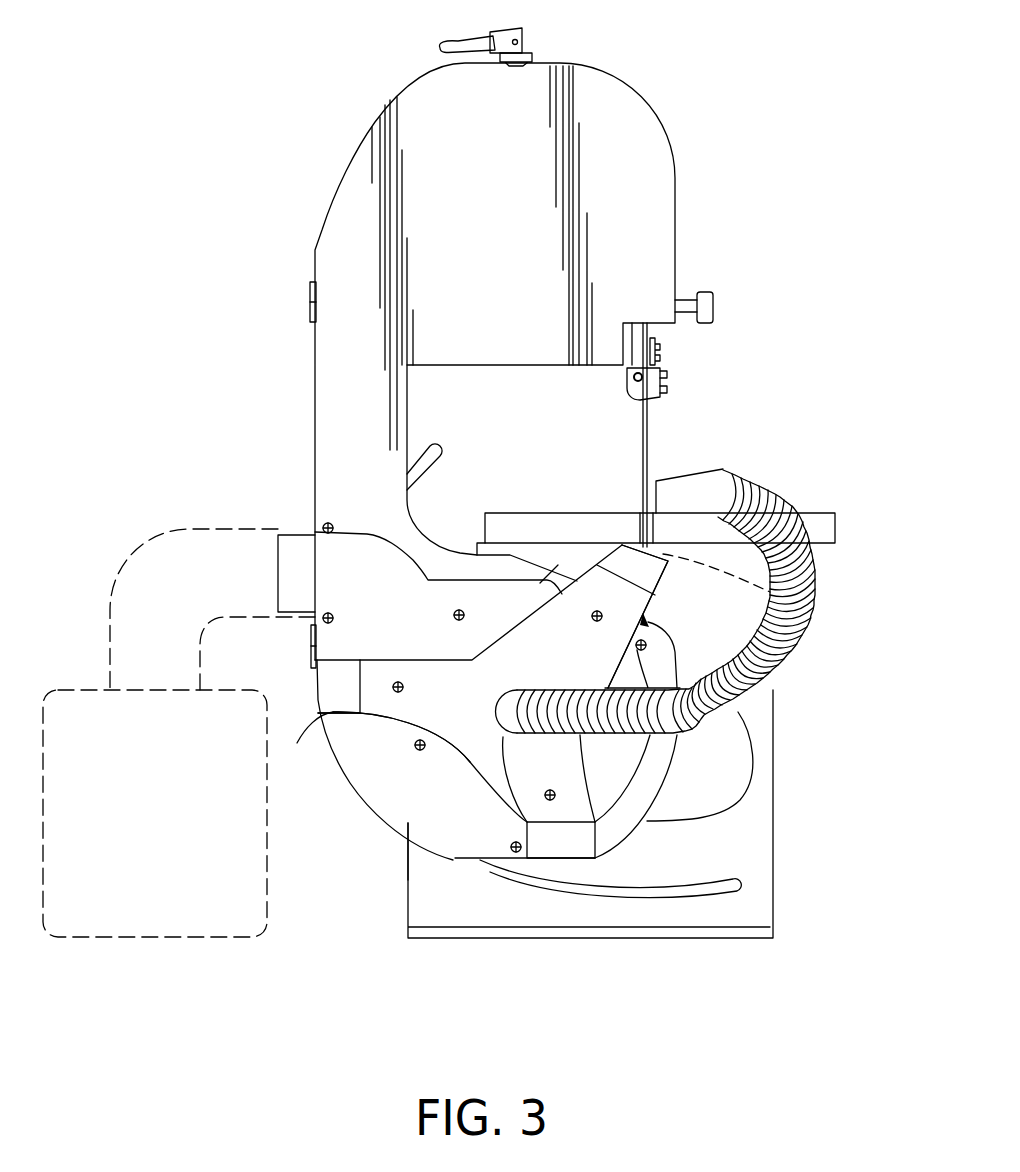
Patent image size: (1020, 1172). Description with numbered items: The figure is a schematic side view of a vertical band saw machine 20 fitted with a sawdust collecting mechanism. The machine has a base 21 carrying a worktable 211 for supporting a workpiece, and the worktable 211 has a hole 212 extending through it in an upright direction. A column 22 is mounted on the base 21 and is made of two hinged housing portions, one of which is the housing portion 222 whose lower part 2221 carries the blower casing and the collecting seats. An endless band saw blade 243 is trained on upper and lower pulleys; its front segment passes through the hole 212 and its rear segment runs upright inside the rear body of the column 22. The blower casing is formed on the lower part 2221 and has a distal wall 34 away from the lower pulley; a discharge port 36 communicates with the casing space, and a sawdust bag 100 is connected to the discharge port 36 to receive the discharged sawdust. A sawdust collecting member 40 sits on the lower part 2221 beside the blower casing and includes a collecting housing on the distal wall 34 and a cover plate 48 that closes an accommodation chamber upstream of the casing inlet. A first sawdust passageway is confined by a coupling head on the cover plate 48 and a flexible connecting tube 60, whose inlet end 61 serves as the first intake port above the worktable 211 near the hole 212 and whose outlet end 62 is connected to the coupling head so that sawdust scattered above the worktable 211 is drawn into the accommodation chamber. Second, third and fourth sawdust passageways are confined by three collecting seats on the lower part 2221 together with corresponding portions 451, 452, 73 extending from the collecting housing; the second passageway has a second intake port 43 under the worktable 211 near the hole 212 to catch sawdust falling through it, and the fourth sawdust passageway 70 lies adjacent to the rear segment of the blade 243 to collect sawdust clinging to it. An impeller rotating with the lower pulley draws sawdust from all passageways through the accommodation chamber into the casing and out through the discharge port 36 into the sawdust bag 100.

The vertical band saw machine 20 is at (660, 94).
The base 21 is at (777, 832).
The column 22 is at (348, 174).
The housing portion 222 is at (324, 362).
The lower part of the housing portion 2221 is at (647, 783).
The worktable 211 is at (822, 514).
The hole 212 is at (643, 528).
The endless band saw blade 243 is at (648, 422).
The distal wall 34 is at (403, 823).
The discharge port 36 is at (299, 535).
The sawdust collecting member 40 is at (466, 772).
The second intake port 43 is at (808, 626).
The portion of the collecting housing 451 is at (650, 577).
The portion of the collecting housing 452 is at (587, 838).
The cover plate 48 is at (443, 730).
The flexible connecting tube 60 is at (801, 668).
The inlet end 61 is at (690, 480).
The outlet end 62 is at (503, 735).
The fourth sawdust passageway 70 is at (347, 748).
The portion of the collecting housing 73 is at (333, 712).
The sawdust bag 100 is at (172, 950).